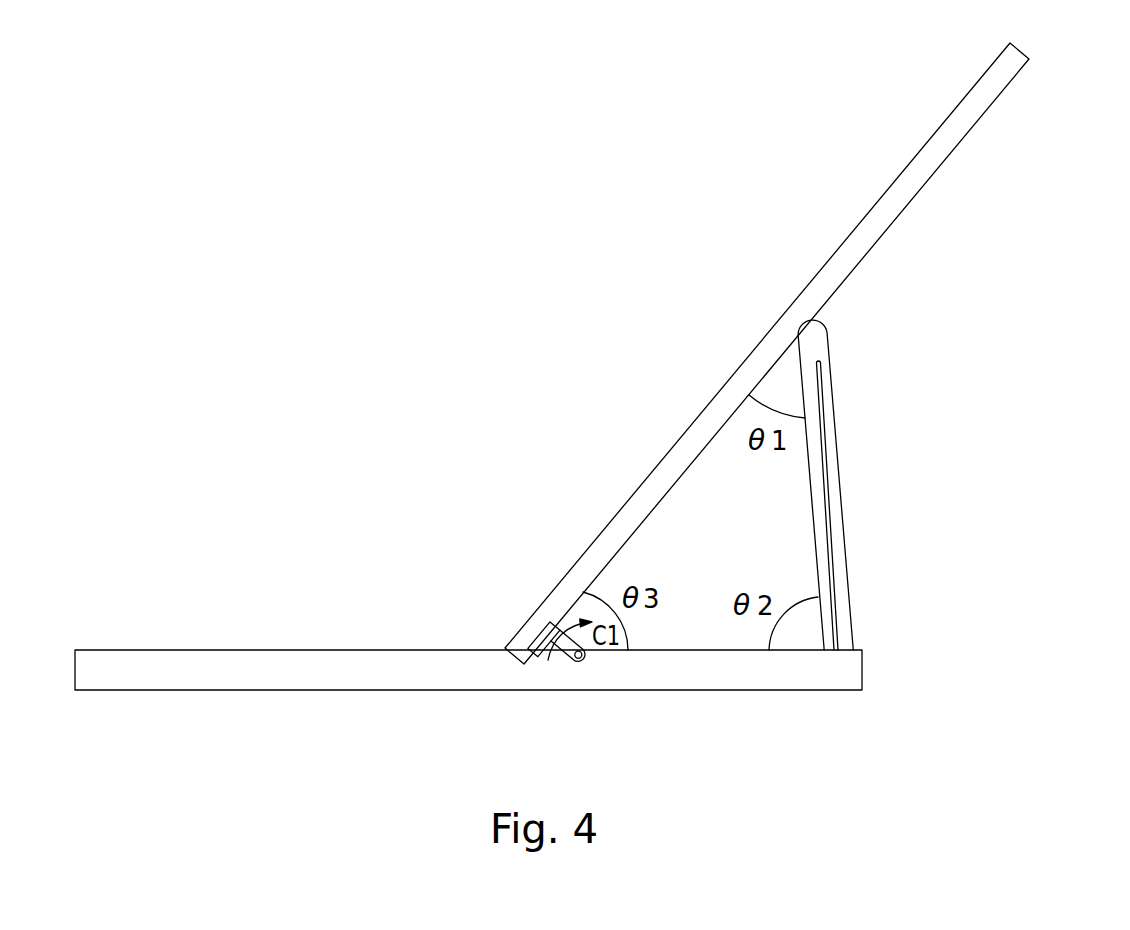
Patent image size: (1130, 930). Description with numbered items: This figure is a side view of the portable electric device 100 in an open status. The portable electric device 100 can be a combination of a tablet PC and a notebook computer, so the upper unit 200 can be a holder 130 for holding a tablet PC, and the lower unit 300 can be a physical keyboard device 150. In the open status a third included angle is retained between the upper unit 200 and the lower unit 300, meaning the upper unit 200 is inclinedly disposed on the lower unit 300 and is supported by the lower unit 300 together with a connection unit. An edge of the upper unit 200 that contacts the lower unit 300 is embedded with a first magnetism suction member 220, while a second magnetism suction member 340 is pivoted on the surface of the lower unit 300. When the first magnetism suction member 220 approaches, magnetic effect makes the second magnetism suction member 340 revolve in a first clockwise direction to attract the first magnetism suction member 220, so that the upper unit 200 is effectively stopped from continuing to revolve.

The portable electric device 100 is at (183, 97).
The holder 130 is at (922, 170).
The physical keyboard device 150 is at (201, 662).
The upper unit 200 is at (815, 344).
The first magnetism suction member 220 is at (531, 630).
The lower unit 300 is at (540, 505).
The second magnetism suction member 340 is at (543, 646).